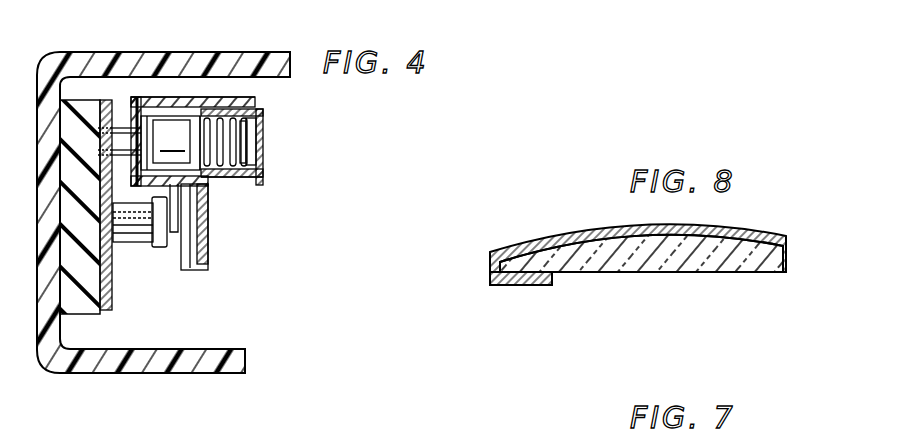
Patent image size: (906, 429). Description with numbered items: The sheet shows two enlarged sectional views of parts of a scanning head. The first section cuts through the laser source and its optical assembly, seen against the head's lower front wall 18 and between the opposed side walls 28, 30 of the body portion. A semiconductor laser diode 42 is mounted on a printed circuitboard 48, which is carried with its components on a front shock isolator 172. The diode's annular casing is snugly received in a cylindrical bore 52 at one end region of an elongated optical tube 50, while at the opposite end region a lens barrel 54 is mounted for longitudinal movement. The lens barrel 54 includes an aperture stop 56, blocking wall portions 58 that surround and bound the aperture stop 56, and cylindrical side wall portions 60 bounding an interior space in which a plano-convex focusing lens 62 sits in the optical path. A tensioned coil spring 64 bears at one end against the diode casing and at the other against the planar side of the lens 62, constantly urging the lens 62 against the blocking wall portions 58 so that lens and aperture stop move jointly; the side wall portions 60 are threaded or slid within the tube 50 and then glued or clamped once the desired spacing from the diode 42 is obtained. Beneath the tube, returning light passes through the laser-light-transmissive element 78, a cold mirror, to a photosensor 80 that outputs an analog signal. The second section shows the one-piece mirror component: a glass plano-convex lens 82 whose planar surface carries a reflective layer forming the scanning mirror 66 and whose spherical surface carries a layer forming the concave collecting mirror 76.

In FIG. 4, the lower front wall 18 is at (39, 74).
In FIG. 4, the side wall 28 is at (168, 357).
In FIG. 4, the side wall 30 is at (217, 53).
In FIG. 4, the semiconductor laser diode 42 is at (172, 109).
In FIG. 4, the printed circuitboard 48 is at (103, 100).
In FIG. 4, the optical tube 50 is at (223, 99).
In FIG. 4, the cylindrical bore 52 is at (145, 99).
In FIG. 4, the lens barrel 54 is at (256, 166).
In FIG. 4, the aperture stop 56 is at (248, 133).
In FIG. 4, the blocking wall portions 58 is at (252, 116).
In FIG. 4, the cylindrical side wall portions 60 is at (258, 107).
In FIG. 4, the focusing lens 62 is at (243, 178).
In FIG. 4, the coil spring 64 is at (258, 140).
In FIG. 4, the laser-light-transmissive element 78 is at (208, 270).
In FIG. 4, the photosensor 80 is at (135, 248).
In FIG. 4, the front shock isolator 172 is at (82, 303).
In FIG. 8, the collecting mirror 76 is at (574, 230).
In FIG. 8, the scanning mirror 66 is at (523, 286).
In FIG. 8, the plano-convex lens 82 is at (603, 265).